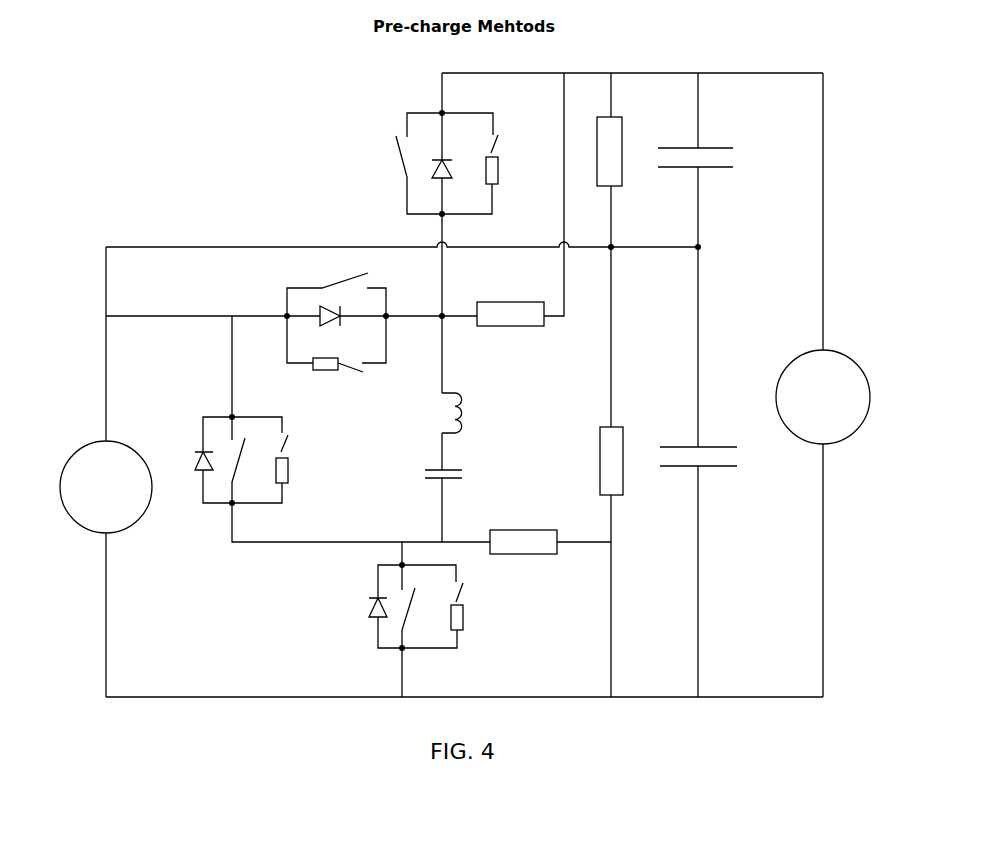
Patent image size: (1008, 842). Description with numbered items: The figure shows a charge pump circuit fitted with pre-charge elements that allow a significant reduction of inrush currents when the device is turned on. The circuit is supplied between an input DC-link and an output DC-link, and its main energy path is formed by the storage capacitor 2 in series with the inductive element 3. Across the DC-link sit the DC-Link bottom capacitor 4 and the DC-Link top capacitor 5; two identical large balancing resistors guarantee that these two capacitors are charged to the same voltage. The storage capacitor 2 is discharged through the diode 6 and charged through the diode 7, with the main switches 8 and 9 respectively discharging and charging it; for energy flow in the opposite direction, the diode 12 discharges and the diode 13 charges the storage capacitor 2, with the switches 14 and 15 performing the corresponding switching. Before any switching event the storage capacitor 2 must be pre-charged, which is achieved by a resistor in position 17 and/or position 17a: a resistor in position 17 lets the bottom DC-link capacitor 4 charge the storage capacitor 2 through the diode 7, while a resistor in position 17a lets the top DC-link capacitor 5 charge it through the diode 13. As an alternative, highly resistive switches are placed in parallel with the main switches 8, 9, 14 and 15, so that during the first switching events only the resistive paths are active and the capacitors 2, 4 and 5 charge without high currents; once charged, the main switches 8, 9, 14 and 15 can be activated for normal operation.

The storage capacitor 2 is at (436, 477).
The inductive element 3 is at (445, 413).
The DC-Link bottom capacitor 4 is at (709, 460).
The DC-Link top capacitor 5 is at (705, 155).
The diode discharging the storage capacitor 6 is at (451, 172).
The diode charging the storage capacitor 7 is at (336, 328).
The switch discharging the storage capacitor 8 is at (245, 460).
The switch charging the storage capacitor 9 is at (415, 606).
The diode discharging the storage capacitor for an opposite energy flow 12 is at (370, 606).
The diode charging the storage capacitor for an opposite energy flow 13 is at (198, 460).
The switch discharging the storage capacitor for an opposite energy flow 14 is at (336, 285).
The switch charging the storage capacitor for an opposite energy flow 15 is at (408, 163).
The resistor to pre-charge the storage capacitor 17 is at (523, 530).
The resistor to pre-charge the storage capacitor (for voltage divider) 17a is at (510, 328).